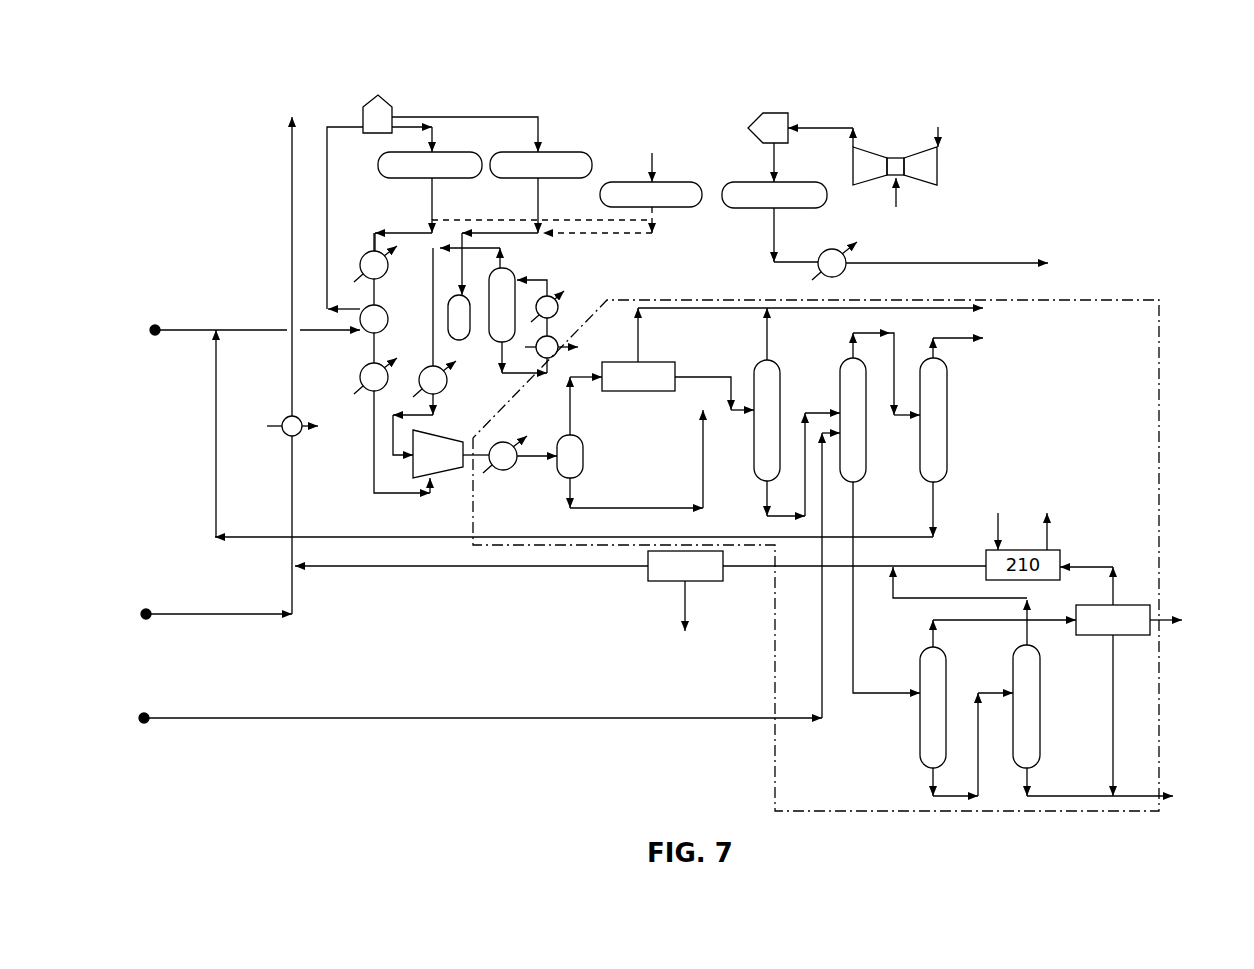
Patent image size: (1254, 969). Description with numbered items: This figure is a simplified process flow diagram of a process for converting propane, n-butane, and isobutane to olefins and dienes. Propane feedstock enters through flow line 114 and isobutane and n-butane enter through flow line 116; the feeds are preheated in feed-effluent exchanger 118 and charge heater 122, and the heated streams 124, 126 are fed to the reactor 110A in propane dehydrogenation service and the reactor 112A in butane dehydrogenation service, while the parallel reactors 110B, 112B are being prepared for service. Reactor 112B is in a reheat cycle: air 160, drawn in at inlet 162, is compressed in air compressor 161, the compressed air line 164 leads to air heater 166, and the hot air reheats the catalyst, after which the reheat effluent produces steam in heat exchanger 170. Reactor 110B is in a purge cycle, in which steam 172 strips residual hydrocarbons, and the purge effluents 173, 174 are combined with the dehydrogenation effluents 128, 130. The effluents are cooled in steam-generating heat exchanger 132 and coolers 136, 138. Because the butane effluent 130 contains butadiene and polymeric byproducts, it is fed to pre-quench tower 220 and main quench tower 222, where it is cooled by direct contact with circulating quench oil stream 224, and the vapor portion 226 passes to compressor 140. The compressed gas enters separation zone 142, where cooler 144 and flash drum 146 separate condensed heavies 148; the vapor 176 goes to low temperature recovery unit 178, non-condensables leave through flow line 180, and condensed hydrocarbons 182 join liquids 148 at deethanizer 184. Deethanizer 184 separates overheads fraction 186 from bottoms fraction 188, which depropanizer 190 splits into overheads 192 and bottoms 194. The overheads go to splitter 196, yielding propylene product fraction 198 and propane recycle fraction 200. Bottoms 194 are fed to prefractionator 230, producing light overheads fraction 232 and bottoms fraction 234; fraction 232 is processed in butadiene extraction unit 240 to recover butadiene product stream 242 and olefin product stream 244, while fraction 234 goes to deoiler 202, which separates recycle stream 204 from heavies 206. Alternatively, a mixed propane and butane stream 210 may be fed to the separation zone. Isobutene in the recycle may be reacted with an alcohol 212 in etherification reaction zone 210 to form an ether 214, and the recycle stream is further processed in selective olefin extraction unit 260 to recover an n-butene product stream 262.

The C3 dehydrogenation reactor 110A is at (430, 165).
The C3 dehydrogenation reactor 110B is at (651, 194).
The C4 dehydrogenation reactor 112A is at (541, 165).
The C4 dehydrogenation reactor 112B is at (774, 175).
The flow line 114 is at (183, 328).
The flow line 116 is at (225, 613).
The feed-effluent exchanger 118 is at (384, 308).
The charge heater 122 is at (365, 100).
The heated stream 124 is at (434, 135).
The heated stream 126 is at (455, 117).
The C3 dehydrogenation effluent flow line 128 is at (432, 190).
The C4 dehydrogenation effluent flow line 130 is at (538, 190).
The heat exchanger 132 is at (365, 256).
The cooler 136 is at (362, 371).
The cooler 138 is at (447, 388).
The compressor 140 is at (428, 443).
The separation zone 142 is at (1082, 299).
The cooler 144 is at (510, 471).
The flash drum 146 is at (584, 458).
The condensed heavies 148 is at (660, 507).
The air 160 is at (941, 132).
The air compressor 161 is at (918, 156).
The air feed stream 162 is at (898, 200).
The turbine exhaust stream 164 is at (822, 128).
The air heater 166 is at (762, 113).
The heat exchanger 170 is at (820, 252).
The steam 172 is at (650, 163).
The purge effluent 173 is at (462, 218).
The purge effluent 174 is at (624, 238).
The vapor 176 is at (571, 405).
The low temperature recovery unit 178 is at (638, 376).
The flow line 180 is at (668, 302).
The condensed hydrocarbons 182 is at (694, 377).
The deethanizer 184 is at (767, 420).
The overheads fraction 186 is at (767, 345).
The bottoms fraction 188 is at (814, 411).
The depropanizer 190 is at (853, 420).
The overheads 192 is at (851, 350).
The bottoms 194 is at (897, 692).
The C3 splitter 196 is at (933, 420).
The propylene product fraction 198 is at (930, 352).
The propane recycle fraction 200 is at (900, 537).
The deoiler 202 is at (1026, 706).
The overheads fraction 204 is at (918, 598).
The bottoms fraction 206 is at (1128, 795).
The etherification reaction zone 210 is at (225, 718).
The alcohol 212 is at (999, 530).
The ether 214 is at (1049, 535).
The pre-quench tower 220 is at (459, 340).
The main quench tower 222 is at (518, 320).
The circulating quench oil stream 224 is at (551, 293).
The vapor portion 226 is at (433, 350).
The prefractionator 230 is at (933, 707).
The overheads fraction 232 is at (1010, 622).
The bottoms fraction 234 is at (996, 692).
The butadiene extraction unit 240 is at (1113, 620).
The butadiene product stream 242 is at (1165, 618).
The C4 olefin product stream 244 is at (1090, 566).
The selective olefin extraction unit 260 is at (640, 566).
The n-butene product stream 262 is at (688, 604).